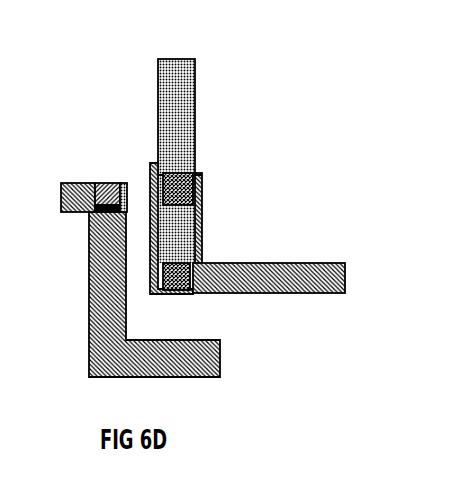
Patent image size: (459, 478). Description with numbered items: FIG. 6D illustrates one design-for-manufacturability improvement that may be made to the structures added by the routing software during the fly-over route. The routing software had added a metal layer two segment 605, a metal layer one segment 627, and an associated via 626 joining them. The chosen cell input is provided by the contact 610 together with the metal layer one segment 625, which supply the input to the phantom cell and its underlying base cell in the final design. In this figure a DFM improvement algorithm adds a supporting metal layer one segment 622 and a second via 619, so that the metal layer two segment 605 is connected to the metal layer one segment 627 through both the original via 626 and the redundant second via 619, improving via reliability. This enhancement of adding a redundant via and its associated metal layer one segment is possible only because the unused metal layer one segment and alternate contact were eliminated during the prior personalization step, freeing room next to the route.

The metal layer 2 segment 605 is at (195, 125).
The contact 610 is at (121, 186).
The second via 619 is at (199, 174).
The supporting metal layer 1 segment 622 is at (200, 213).
The metal layer 1 segment 625 is at (88, 268).
The via 626 is at (191, 263).
The metal layer 1 segment 627 is at (287, 263).